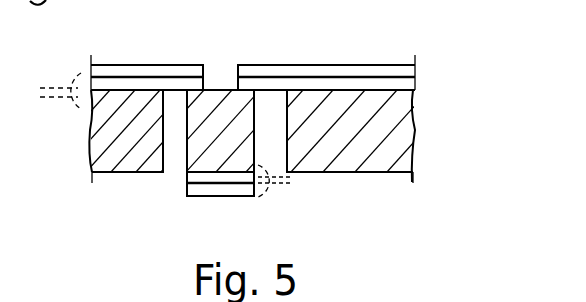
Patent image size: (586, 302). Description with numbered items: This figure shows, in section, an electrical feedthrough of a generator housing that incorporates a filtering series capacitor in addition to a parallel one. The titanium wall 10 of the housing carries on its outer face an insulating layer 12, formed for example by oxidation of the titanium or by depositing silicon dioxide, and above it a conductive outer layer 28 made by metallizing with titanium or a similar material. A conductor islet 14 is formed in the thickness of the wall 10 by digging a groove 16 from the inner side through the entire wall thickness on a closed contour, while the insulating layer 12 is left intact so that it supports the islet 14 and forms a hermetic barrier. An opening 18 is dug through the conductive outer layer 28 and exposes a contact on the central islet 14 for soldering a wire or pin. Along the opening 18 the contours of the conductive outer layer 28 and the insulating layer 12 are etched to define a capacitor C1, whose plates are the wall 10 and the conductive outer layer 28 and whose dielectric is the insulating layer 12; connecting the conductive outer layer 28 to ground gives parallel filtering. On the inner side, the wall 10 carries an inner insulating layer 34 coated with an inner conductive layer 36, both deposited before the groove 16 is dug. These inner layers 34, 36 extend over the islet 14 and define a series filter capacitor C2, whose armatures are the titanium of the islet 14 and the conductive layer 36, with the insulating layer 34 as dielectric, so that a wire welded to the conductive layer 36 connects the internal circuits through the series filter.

The wall 10 is at (345, 157).
The insulating layer 12 is at (352, 83).
The conductor islet 14 is at (193, 147).
The groove 16 is at (172, 162).
The opening 18 is at (222, 83).
The conductive outer layer 28 is at (275, 72).
The insulating layer 34 is at (205, 178).
The conductive layer 36 is at (243, 187).
The capacitor C1 is at (54, 79).
The series filter capacitor C2 is at (286, 194).